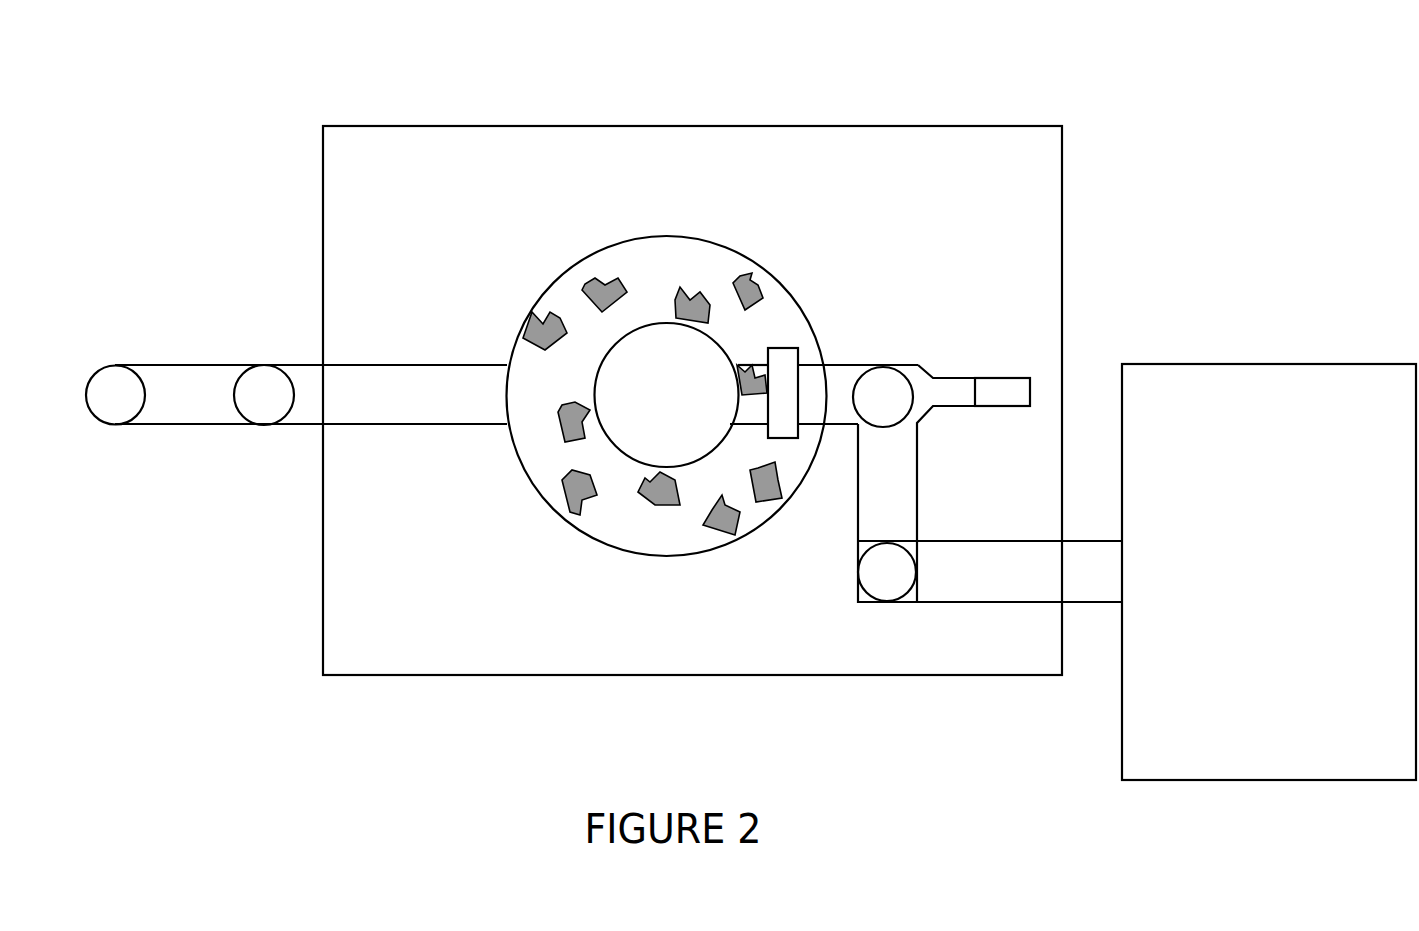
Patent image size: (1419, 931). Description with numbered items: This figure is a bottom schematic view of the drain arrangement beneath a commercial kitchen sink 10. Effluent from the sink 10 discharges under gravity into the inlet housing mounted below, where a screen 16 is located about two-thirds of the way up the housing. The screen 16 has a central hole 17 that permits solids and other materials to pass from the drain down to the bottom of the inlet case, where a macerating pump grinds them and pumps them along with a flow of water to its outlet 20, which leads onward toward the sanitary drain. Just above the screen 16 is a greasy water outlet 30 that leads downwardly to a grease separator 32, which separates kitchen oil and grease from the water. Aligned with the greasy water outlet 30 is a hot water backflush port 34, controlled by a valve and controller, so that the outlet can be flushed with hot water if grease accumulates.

The commercial kitchen sink 10 is at (973, 157).
The screen 16 is at (708, 262).
The central hole 17 is at (621, 365).
The outlet 20 is at (382, 395).
The greasy water outlet 30 is at (900, 481).
The grease separator 32 is at (1269, 572).
The hot water backflush port 34 is at (1003, 395).